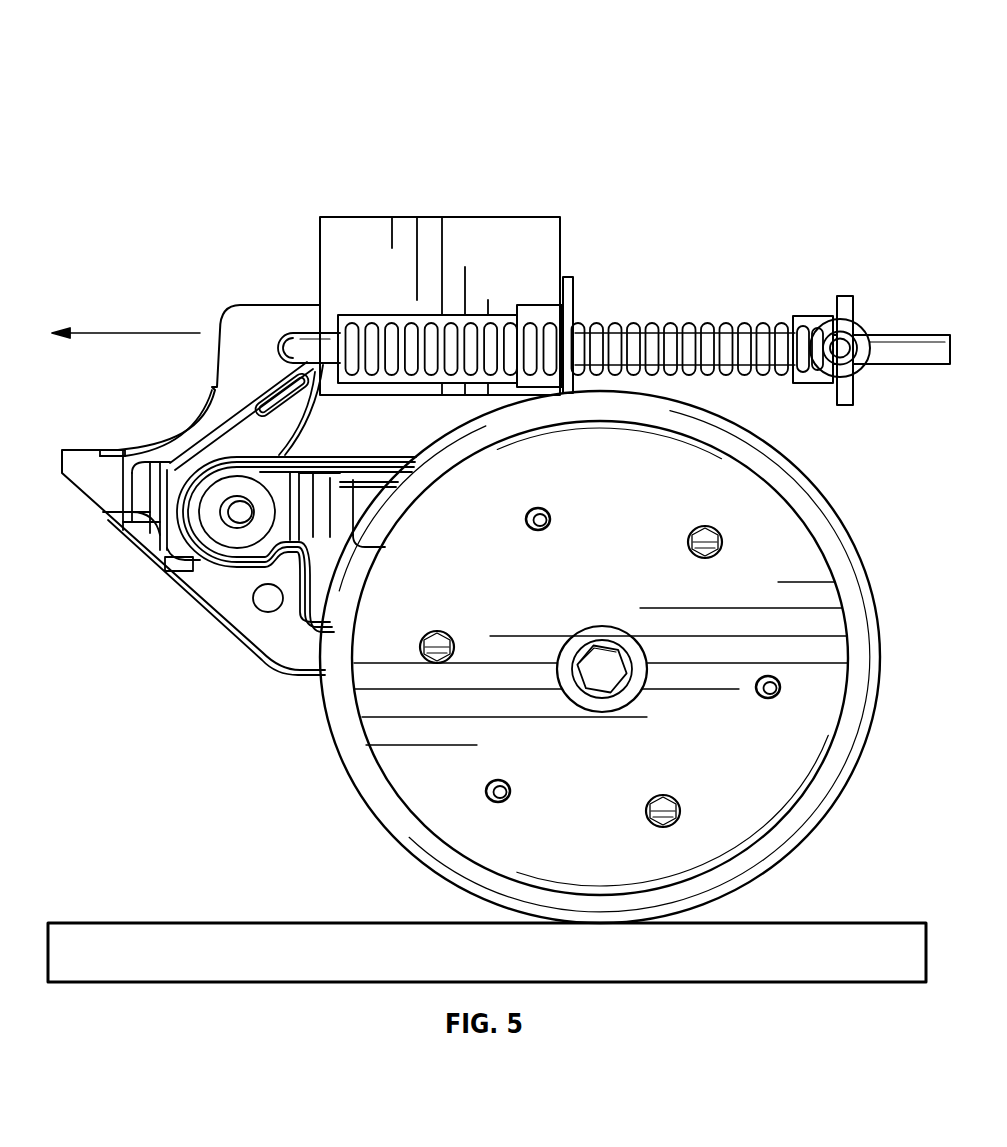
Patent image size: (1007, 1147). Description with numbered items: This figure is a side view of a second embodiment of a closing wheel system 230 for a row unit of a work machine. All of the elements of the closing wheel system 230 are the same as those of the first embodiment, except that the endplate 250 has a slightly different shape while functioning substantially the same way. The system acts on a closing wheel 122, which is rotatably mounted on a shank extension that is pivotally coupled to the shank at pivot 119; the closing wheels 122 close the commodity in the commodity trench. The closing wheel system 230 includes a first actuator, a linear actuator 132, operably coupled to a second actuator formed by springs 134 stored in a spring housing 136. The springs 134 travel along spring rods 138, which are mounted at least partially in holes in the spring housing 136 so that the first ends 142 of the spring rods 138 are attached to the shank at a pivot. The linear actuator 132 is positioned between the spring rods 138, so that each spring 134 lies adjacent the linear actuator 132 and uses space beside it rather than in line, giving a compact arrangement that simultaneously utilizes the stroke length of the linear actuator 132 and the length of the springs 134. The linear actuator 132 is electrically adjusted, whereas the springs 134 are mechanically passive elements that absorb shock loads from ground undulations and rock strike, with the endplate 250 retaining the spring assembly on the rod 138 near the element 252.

The closing wheel system 230 is at (418, 64).
The pivot 119 is at (237, 513).
The closing wheels 122 is at (802, 572).
The linear actuator 132 is at (473, 255).
The springs 134 is at (657, 328).
The spring housing 136 is at (567, 310).
The spring rods 138 is at (932, 355).
The first ends 142 is at (302, 340).
The endplate 250 is at (815, 378).
The bushing 252 is at (850, 342).